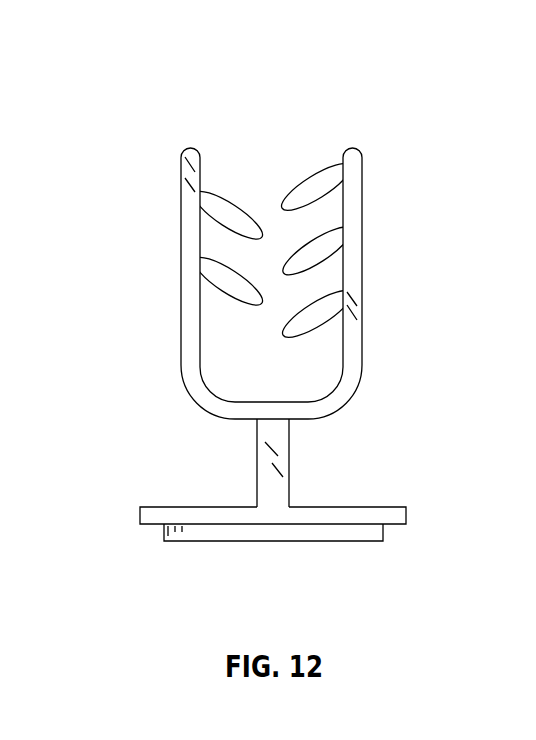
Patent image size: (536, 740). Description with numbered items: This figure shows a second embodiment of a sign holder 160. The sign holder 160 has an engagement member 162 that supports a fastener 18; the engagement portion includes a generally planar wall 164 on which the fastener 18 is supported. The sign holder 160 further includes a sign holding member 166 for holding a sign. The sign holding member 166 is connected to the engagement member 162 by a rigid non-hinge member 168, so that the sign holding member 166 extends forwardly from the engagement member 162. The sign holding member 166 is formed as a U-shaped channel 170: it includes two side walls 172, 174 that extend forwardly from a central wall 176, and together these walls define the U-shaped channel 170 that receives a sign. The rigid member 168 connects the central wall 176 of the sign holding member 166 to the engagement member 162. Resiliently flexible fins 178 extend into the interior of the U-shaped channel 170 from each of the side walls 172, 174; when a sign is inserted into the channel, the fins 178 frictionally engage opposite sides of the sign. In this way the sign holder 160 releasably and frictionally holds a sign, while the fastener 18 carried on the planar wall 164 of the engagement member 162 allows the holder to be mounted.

The sign holder 160 is at (419, 82).
The sign holding member 166 is at (380, 310).
The U-shaped channel 170 is at (262, 144).
The resiliently flexible fins 178 is at (318, 172).
The side wall 172 is at (181, 327).
The side wall 174 is at (363, 210).
The central wall 176 is at (227, 418).
The rigid non-hinge member 168 is at (289, 463).
The engagement member 162 is at (350, 513).
The generally planar wall 164 is at (192, 523).
The fastener 18 is at (213, 533).